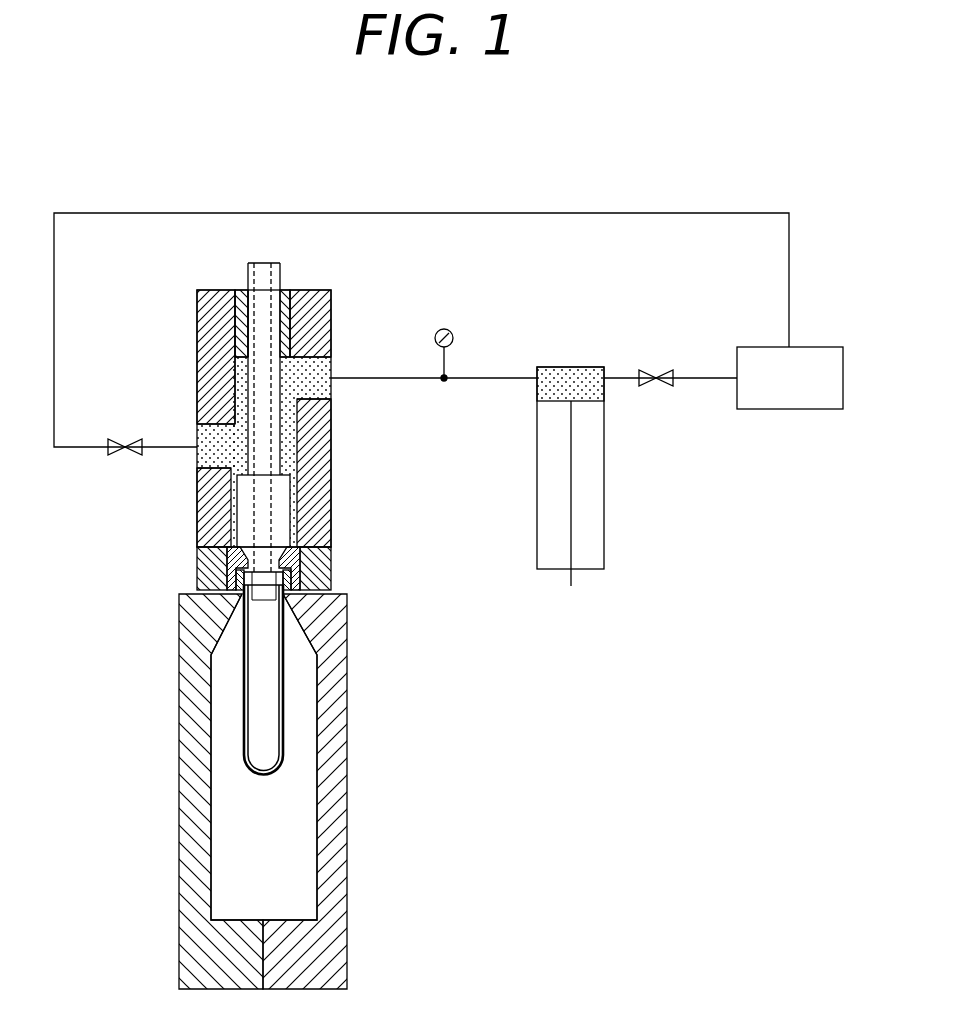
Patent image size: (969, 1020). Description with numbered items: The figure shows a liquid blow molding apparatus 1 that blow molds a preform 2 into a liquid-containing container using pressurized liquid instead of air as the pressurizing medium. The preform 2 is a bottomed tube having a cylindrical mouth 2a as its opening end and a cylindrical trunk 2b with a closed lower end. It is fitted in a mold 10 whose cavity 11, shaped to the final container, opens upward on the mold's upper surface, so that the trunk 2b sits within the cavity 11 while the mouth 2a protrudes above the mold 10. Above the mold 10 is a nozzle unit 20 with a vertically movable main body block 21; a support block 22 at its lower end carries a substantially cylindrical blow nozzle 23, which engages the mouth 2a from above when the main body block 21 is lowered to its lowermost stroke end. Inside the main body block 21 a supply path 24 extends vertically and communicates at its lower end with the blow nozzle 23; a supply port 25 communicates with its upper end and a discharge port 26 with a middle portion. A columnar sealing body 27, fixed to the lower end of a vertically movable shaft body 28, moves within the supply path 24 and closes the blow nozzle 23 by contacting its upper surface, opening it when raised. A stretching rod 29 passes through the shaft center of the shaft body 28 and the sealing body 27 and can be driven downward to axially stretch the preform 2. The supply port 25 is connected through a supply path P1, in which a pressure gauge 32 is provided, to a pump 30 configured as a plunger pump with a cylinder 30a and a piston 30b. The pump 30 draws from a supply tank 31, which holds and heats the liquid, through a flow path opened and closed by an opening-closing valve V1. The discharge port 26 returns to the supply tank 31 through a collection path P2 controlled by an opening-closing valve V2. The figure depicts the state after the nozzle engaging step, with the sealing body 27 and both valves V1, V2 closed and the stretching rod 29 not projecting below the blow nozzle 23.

The liquid blow molding apparatus 1 is at (500, 160).
The preform 2 is at (328, 673).
The mouth 2a is at (306, 576).
The trunk 2b is at (283, 684).
The mold 10 is at (308, 791).
The cavity 11 is at (312, 806).
The nozzle unit 20 is at (259, 413).
The main body block 21 is at (210, 328).
The support block 22 is at (197, 576).
The blow nozzle 23 is at (304, 560).
The supply path 24 is at (300, 420).
The supply port 25 is at (331, 366).
The discharge port 26 is at (197, 436).
The sealing body 27 is at (276, 498).
The shaft body 28 is at (248, 279).
The stretching rod 29 is at (258, 602).
The pump 30 is at (584, 447).
The cylinder 30a is at (604, 533).
The piston 30b is at (536, 410).
The supply tank 31 is at (776, 390).
The pressure gauge 32 is at (444, 328).
The supply path P1 is at (491, 377).
The collection path P2 is at (393, 212).
The opening-closing valve V1 is at (656, 370).
The opening-closing valve V2 is at (126, 455).